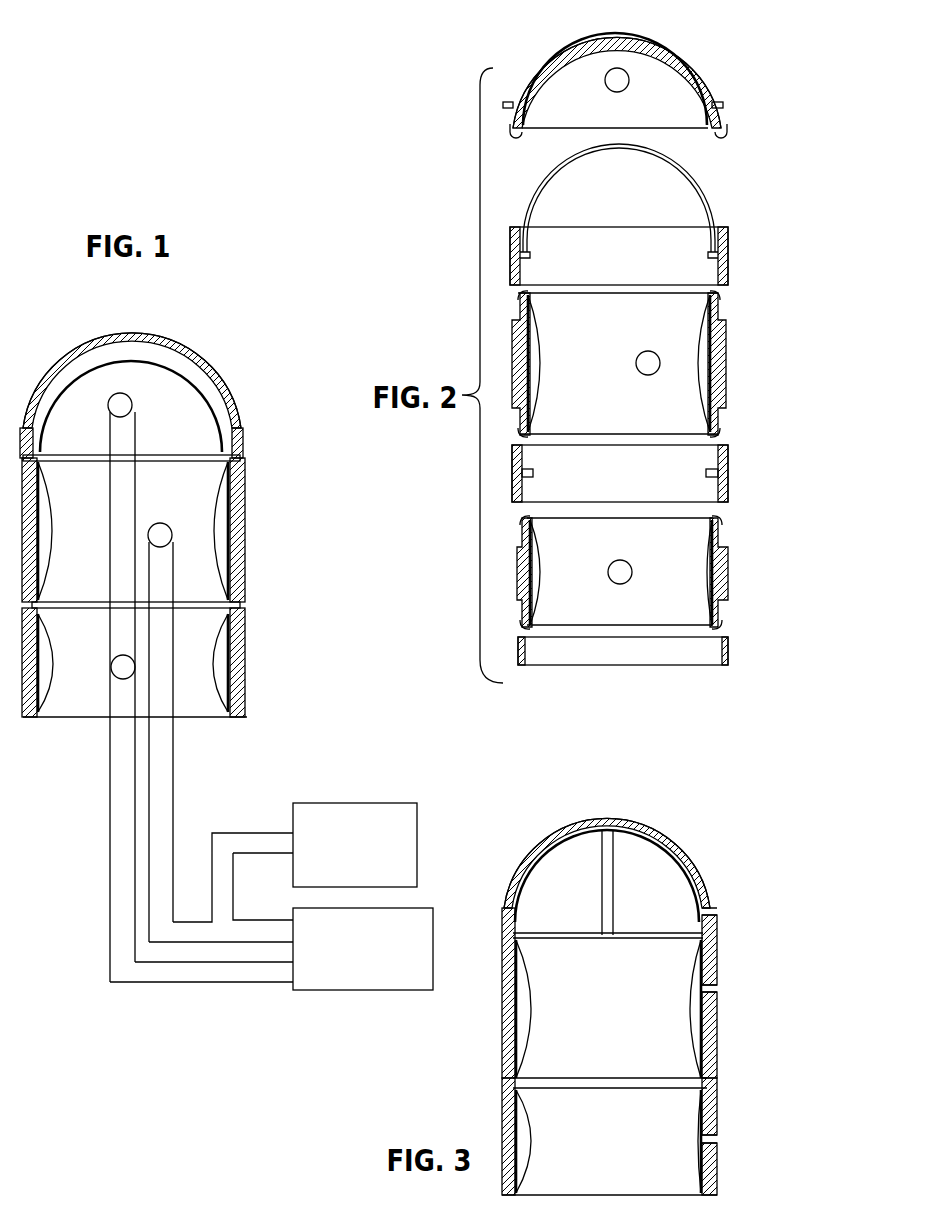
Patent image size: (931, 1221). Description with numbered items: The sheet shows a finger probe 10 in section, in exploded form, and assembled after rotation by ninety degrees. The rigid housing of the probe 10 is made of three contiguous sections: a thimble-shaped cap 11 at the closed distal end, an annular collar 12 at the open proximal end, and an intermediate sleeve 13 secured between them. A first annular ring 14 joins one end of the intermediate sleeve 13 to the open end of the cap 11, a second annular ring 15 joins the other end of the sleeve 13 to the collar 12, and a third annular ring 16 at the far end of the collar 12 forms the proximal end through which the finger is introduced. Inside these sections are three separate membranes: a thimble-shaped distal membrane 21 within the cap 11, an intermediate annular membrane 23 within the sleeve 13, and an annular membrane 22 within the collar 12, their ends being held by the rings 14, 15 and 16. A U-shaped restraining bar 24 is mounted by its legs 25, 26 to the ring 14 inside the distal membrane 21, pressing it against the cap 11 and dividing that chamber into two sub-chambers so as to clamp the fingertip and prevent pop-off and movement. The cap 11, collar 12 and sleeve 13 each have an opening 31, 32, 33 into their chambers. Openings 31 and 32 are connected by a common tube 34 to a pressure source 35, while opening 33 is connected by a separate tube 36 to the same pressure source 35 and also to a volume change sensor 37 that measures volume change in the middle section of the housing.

In FIG. 1, the finger probe 10 is at (197, 346).
In FIG. 2, the finger probe 10 is at (531, 41).
In FIG. 3, the finger probe 10 is at (708, 853).
In FIG. 1, the thimble-shaped cap 11 is at (223, 373).
In FIG. 2, the thimble-shaped cap 11 is at (707, 56).
In FIG. 3, the thimble-shaped cap 11 is at (710, 880).
In FIG. 1, the annular collar 12 is at (248, 656).
In FIG. 2, the annular collar 12 is at (735, 542).
In FIG. 3, the annular collar 12 is at (714, 1105).
In FIG. 1, the intermediate sleeve 13 is at (246, 548).
In FIG. 2, the intermediate sleeve 13 is at (740, 322).
In FIG. 3, the intermediate sleeve 13 is at (714, 1040).
In FIG. 1, the first annular ring 14 is at (246, 458).
In FIG. 2, the first annular ring 14 is at (729, 249).
In FIG. 3, the first annular ring 14 is at (608, 935).
In FIG. 1, the second annular ring 15 is at (246, 606).
In FIG. 2, the second annular ring 15 is at (730, 476).
In FIG. 3, the second annular ring 15 is at (610, 1083).
In FIG. 1, the third annular ring 16 is at (246, 712).
In FIG. 2, the third annular ring 16 is at (714, 647).
In FIG. 1, the distal membrane 21 is at (232, 403).
In FIG. 2, the distal membrane 21 is at (716, 85).
In FIG. 3, the distal membrane 21 is at (655, 825).
In FIG. 1, the annular membrane 22 is at (232, 678).
In FIG. 2, the annular membrane 22 is at (708, 585).
In FIG. 3, the annular membrane 22 is at (717, 1167).
In FIG. 1, the intermediate annular membrane 23 is at (218, 528).
In FIG. 2, the intermediate annular membrane 23 is at (735, 388).
In FIG. 3, the intermediate annular membrane 23 is at (715, 975).
In FIG. 2, the U-shaped restraining bar 24 is at (547, 178).
In FIG. 3, the U-shaped restraining bar 24 is at (617, 865).
In FIG. 2, the leg 25 is at (528, 258).
In FIG. 2, the leg 26 is at (710, 252).
In FIG. 1, the opening 31 is at (112, 393).
In FIG. 2, the opening 31 is at (625, 92).
In FIG. 3, the opening 31 is at (714, 910).
In FIG. 1, the opening 32 is at (111, 667).
In FIG. 2, the opening 32 is at (628, 562).
In FIG. 3, the opening 32 is at (716, 1138).
In FIG. 1, the opening 33 is at (160, 522).
In FIG. 2, the opening 33 is at (648, 350).
In FIG. 3, the opening 33 is at (720, 990).
In FIG. 1, the common tube 34 is at (123, 765).
In FIG. 1, the pressure source 35 is at (328, 990).
In FIG. 1, the separate tube 36 is at (160, 808).
In FIG. 1, the volume change sensor 37 is at (337, 803).